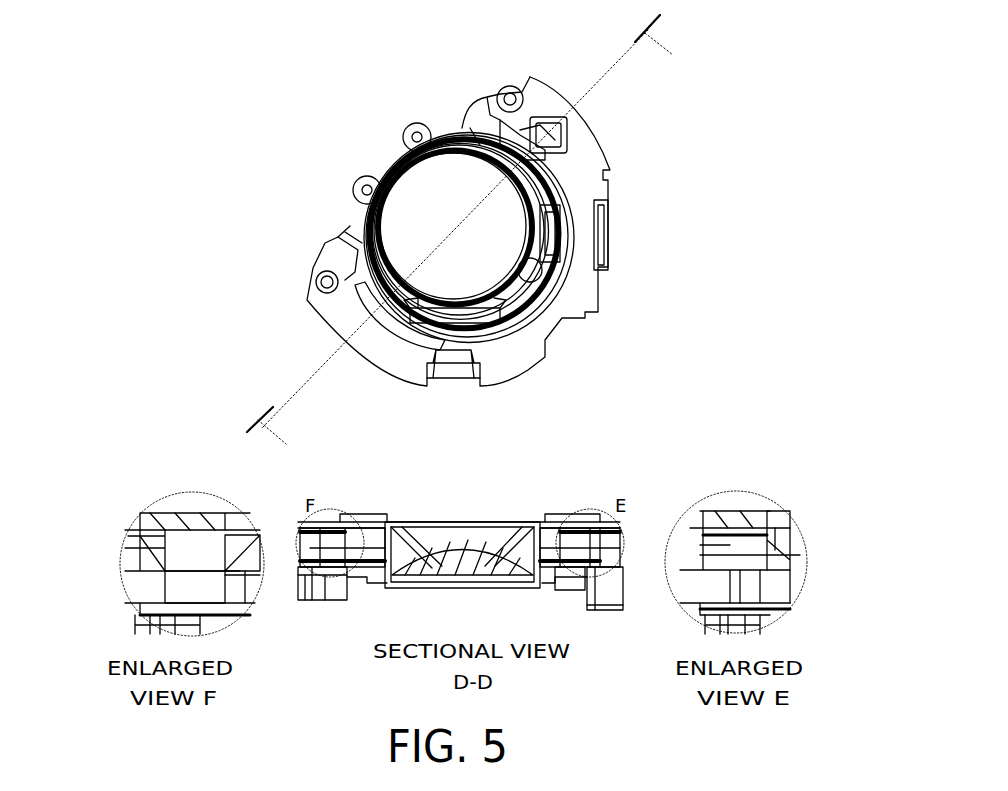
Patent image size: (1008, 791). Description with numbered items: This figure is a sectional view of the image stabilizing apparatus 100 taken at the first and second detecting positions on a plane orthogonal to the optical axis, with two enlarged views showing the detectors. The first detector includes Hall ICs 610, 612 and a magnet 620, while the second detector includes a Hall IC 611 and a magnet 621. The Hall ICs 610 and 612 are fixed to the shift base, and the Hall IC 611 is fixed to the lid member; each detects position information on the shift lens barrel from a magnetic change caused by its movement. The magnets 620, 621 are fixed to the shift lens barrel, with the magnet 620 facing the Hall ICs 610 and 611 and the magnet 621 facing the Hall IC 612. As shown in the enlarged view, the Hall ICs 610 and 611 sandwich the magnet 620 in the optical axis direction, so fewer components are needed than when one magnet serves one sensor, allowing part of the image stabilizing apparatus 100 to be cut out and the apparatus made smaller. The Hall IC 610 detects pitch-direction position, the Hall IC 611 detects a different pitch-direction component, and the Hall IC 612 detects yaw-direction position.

The image stabilizing apparatus 100 is at (600, 138).
The Hall IC 610 is at (747, 615).
The Hall IC 611 is at (742, 518).
The Hall IC 612 is at (175, 616).
The magnet 620 is at (747, 565).
The magnet 621 is at (178, 566).